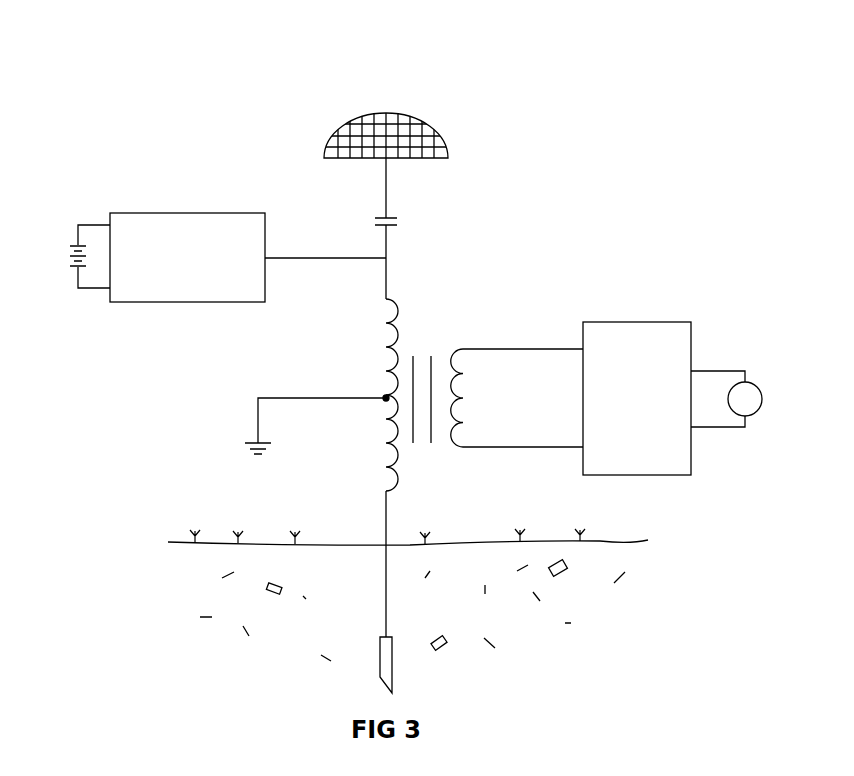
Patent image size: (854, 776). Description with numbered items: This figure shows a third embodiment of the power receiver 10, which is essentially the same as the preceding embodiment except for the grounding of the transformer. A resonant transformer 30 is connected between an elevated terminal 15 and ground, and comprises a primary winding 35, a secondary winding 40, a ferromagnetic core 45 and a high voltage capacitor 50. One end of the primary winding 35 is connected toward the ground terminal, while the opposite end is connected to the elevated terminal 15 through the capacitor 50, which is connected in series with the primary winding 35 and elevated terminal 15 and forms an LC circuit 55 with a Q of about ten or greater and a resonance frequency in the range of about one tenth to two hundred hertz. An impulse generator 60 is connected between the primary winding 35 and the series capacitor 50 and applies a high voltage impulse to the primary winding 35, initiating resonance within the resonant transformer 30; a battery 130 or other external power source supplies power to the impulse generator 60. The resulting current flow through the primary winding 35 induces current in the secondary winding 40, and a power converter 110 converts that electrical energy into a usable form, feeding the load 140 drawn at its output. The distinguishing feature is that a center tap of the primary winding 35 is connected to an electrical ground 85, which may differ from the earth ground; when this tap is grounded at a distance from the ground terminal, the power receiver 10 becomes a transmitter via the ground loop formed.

The power receiver 10 is at (549, 187).
The elevated terminal 15 is at (350, 128).
The resonant transformer 30 is at (386, 382).
The primary winding 35 is at (400, 310).
The secondary winding 40 is at (457, 348).
The ferromagnetic core 45 is at (431, 432).
The high voltage capacitor 50 is at (385, 217).
The LC circuit 55 is at (519, 277).
The impulse generator 60 is at (225, 213).
The electrical ground 85 is at (251, 442).
The power converter 110 is at (650, 322).
The battery 130 is at (72, 244).
The load 140 is at (763, 390).